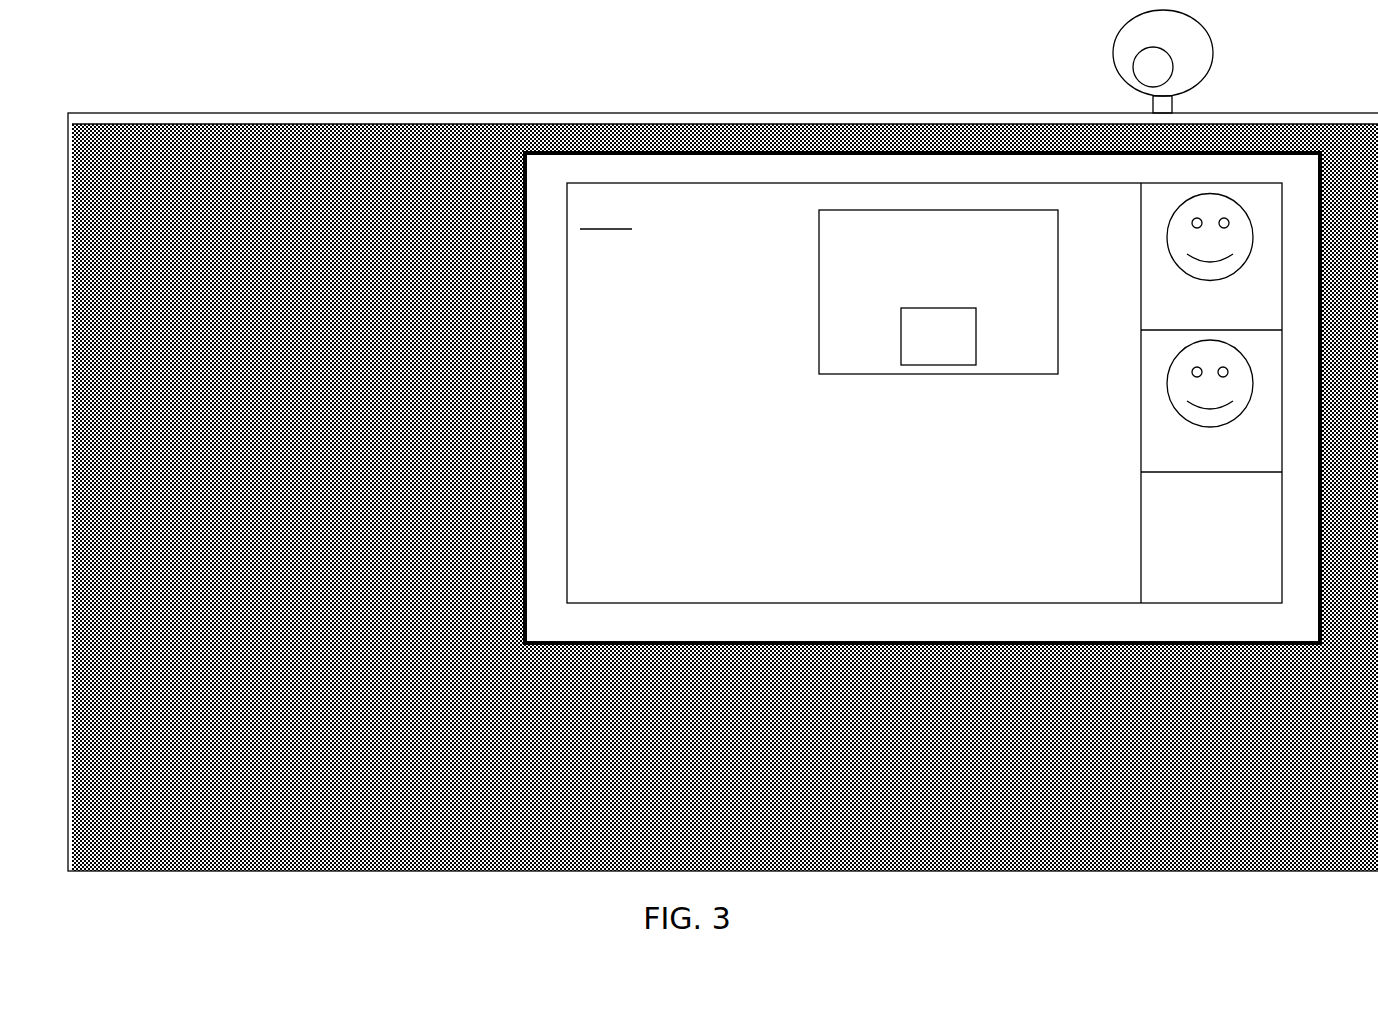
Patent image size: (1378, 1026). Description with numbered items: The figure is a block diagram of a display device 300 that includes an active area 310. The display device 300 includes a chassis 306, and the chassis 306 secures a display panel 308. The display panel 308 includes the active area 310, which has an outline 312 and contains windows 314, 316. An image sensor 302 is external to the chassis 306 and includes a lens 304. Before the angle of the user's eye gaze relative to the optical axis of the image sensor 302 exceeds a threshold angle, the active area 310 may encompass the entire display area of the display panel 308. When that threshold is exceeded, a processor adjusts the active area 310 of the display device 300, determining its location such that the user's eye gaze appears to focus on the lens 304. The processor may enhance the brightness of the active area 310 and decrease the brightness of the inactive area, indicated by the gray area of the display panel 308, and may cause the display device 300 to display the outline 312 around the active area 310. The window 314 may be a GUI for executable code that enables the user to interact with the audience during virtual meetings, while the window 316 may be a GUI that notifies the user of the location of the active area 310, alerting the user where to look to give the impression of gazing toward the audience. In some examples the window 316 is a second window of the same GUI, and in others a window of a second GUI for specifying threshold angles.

The display device 300 is at (102, 113).
The image sensor 302 is at (1213, 54).
The lens 304 is at (1153, 66).
The chassis 306 is at (282, 112).
The display panel 308 is at (438, 150).
The active area 310 is at (544, 175).
The outline 312 is at (647, 150).
The window 314 is at (606, 212).
The window 316 is at (819, 237).